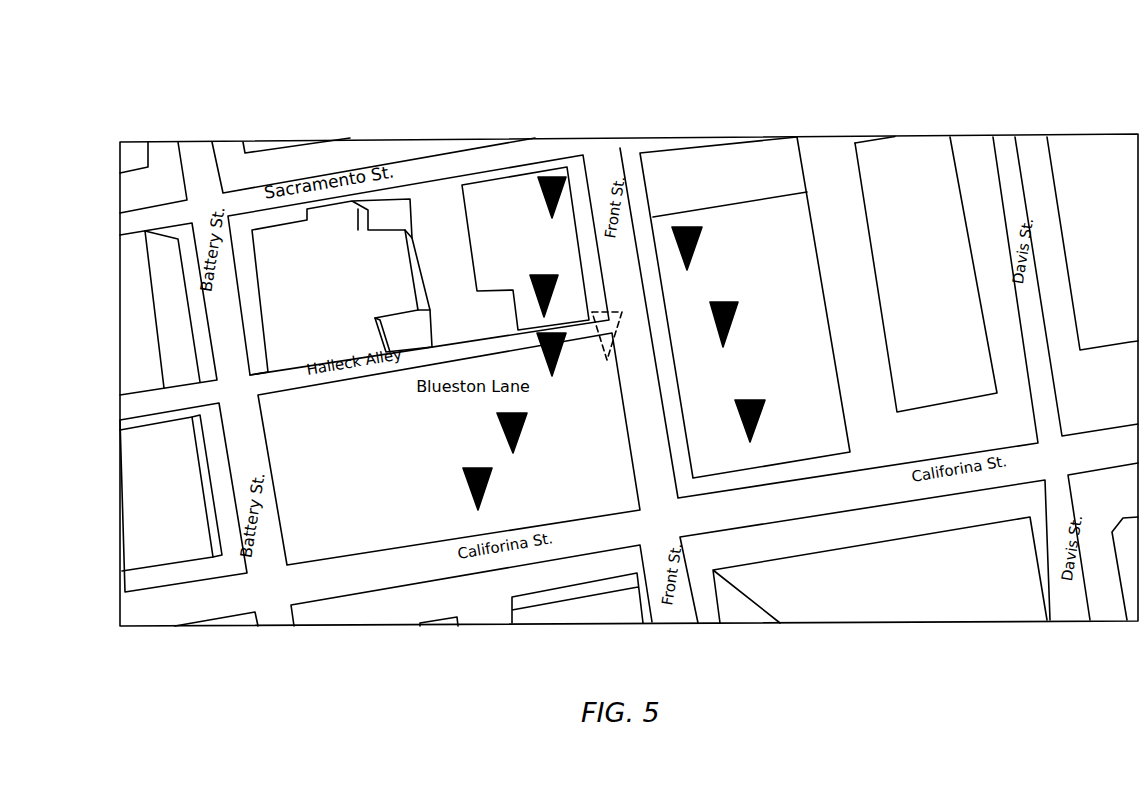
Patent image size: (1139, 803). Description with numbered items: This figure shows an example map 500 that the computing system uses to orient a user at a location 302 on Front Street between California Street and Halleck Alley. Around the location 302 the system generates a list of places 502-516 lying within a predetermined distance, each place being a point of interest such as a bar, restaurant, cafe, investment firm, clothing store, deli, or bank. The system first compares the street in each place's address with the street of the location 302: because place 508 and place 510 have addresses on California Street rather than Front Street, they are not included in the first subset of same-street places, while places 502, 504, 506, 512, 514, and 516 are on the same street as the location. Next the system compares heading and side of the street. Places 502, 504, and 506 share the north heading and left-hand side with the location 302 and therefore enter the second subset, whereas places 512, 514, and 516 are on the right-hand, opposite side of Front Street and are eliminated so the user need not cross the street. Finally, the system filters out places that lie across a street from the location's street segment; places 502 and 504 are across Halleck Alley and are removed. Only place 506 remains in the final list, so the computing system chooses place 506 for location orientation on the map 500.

The map 500 is at (157, 55).
The location 302 is at (617, 325).
The place 502 is at (553, 176).
The place 504 is at (538, 290).
The place 506 is at (561, 354).
The place 508 is at (527, 426).
The place 510 is at (487, 477).
The place 512 is at (693, 241).
The place 514 is at (731, 316).
The place 516 is at (757, 404).